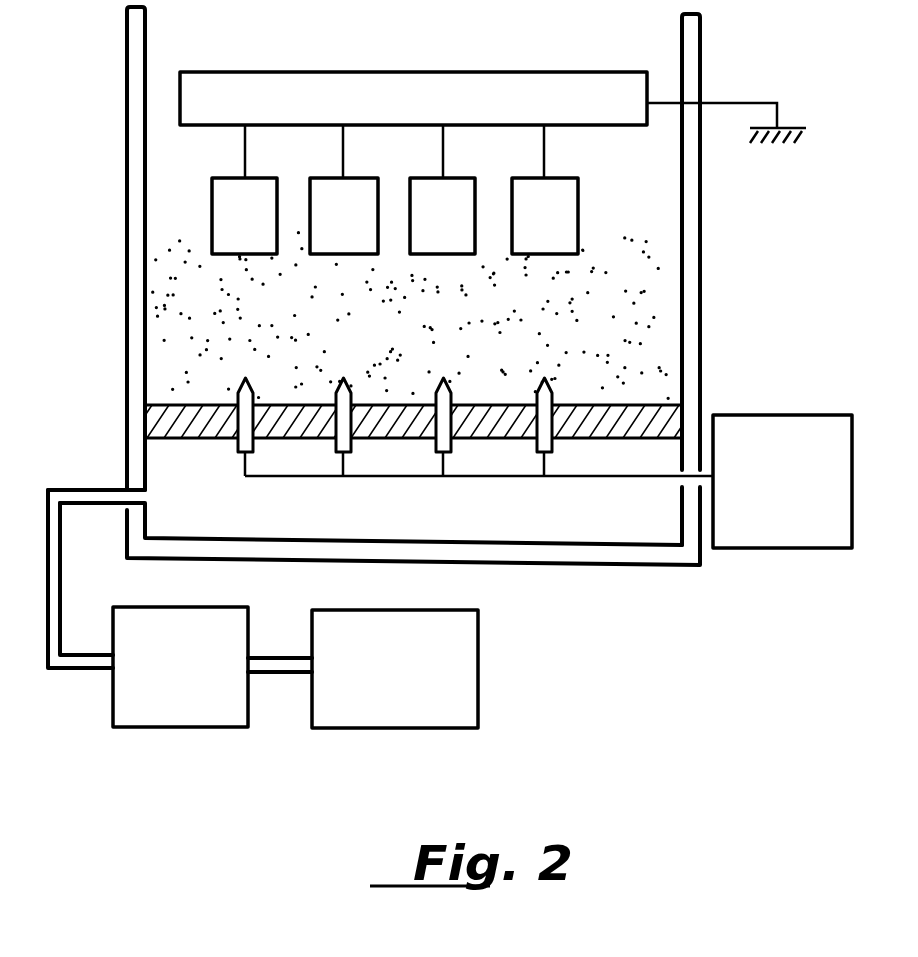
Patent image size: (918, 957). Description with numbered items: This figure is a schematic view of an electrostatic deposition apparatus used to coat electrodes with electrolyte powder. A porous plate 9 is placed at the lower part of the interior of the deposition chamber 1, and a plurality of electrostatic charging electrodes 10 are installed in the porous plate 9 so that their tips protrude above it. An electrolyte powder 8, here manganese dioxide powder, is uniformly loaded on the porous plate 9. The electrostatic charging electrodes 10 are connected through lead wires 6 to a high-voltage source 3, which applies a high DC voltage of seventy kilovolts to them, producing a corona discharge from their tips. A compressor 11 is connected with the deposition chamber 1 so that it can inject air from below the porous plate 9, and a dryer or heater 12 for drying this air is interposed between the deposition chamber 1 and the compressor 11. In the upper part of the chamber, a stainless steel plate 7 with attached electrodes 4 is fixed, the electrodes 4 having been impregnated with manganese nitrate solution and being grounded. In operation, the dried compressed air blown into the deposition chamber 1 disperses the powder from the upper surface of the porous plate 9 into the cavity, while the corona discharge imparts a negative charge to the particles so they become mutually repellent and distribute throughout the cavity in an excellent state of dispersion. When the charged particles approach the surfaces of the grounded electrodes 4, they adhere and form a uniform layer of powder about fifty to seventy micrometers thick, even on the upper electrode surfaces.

The deposition chamber 1 is at (690, 302).
The high-voltage source 3 is at (833, 510).
The electrodes 4 is at (565, 226).
The lead wires 6 is at (546, 153).
The stainless steel plate 7 is at (465, 92).
The electrolyte powder 8 is at (200, 286).
The porous plate 9 is at (218, 418).
The electrostatic charging electrodes 10 is at (237, 390).
The compressor 11 is at (397, 713).
The dryer or heater 12 is at (193, 717).